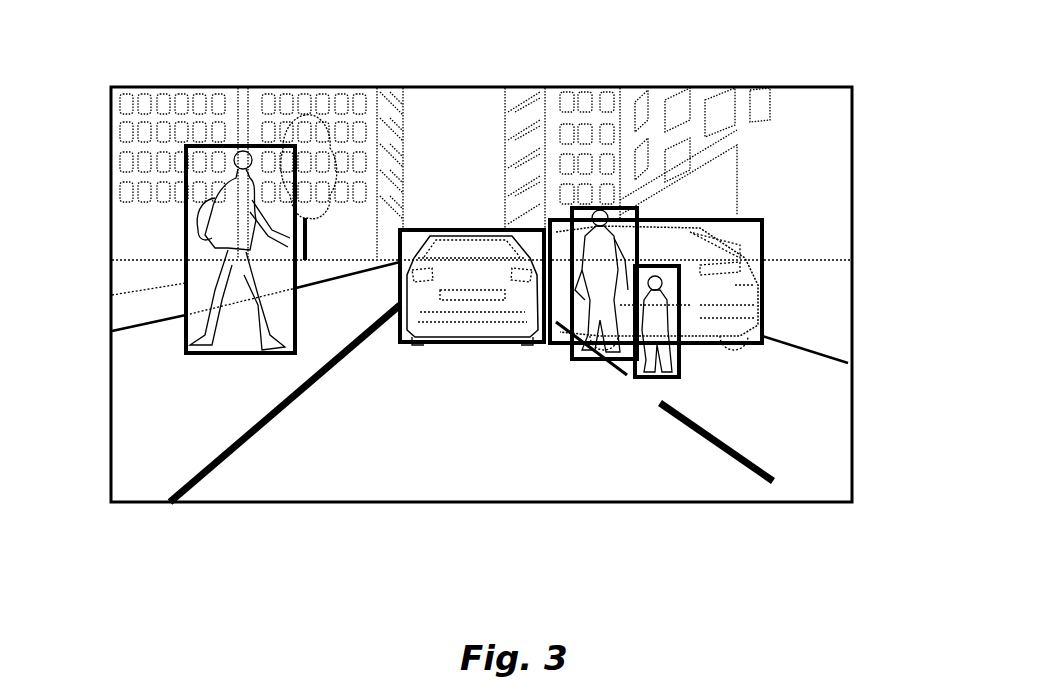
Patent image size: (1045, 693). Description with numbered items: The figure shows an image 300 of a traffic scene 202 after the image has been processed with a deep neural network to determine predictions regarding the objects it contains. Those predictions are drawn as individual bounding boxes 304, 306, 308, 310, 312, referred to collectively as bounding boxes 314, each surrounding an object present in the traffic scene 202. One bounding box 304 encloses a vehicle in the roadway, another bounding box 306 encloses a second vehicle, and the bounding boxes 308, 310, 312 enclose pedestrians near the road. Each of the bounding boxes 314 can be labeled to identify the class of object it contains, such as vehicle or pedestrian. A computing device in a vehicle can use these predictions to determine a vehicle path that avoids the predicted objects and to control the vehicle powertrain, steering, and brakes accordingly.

The image 300 is at (303, 87).
The traffic scene 202 is at (336, 448).
The bounding boxes 314 is at (478, 120).
The bounding box 308 is at (186, 320).
The bounding box 304 is at (498, 345).
The bounding box 306 is at (763, 268).
The bounding box 310 is at (596, 360).
The bounding box 312 is at (648, 378).